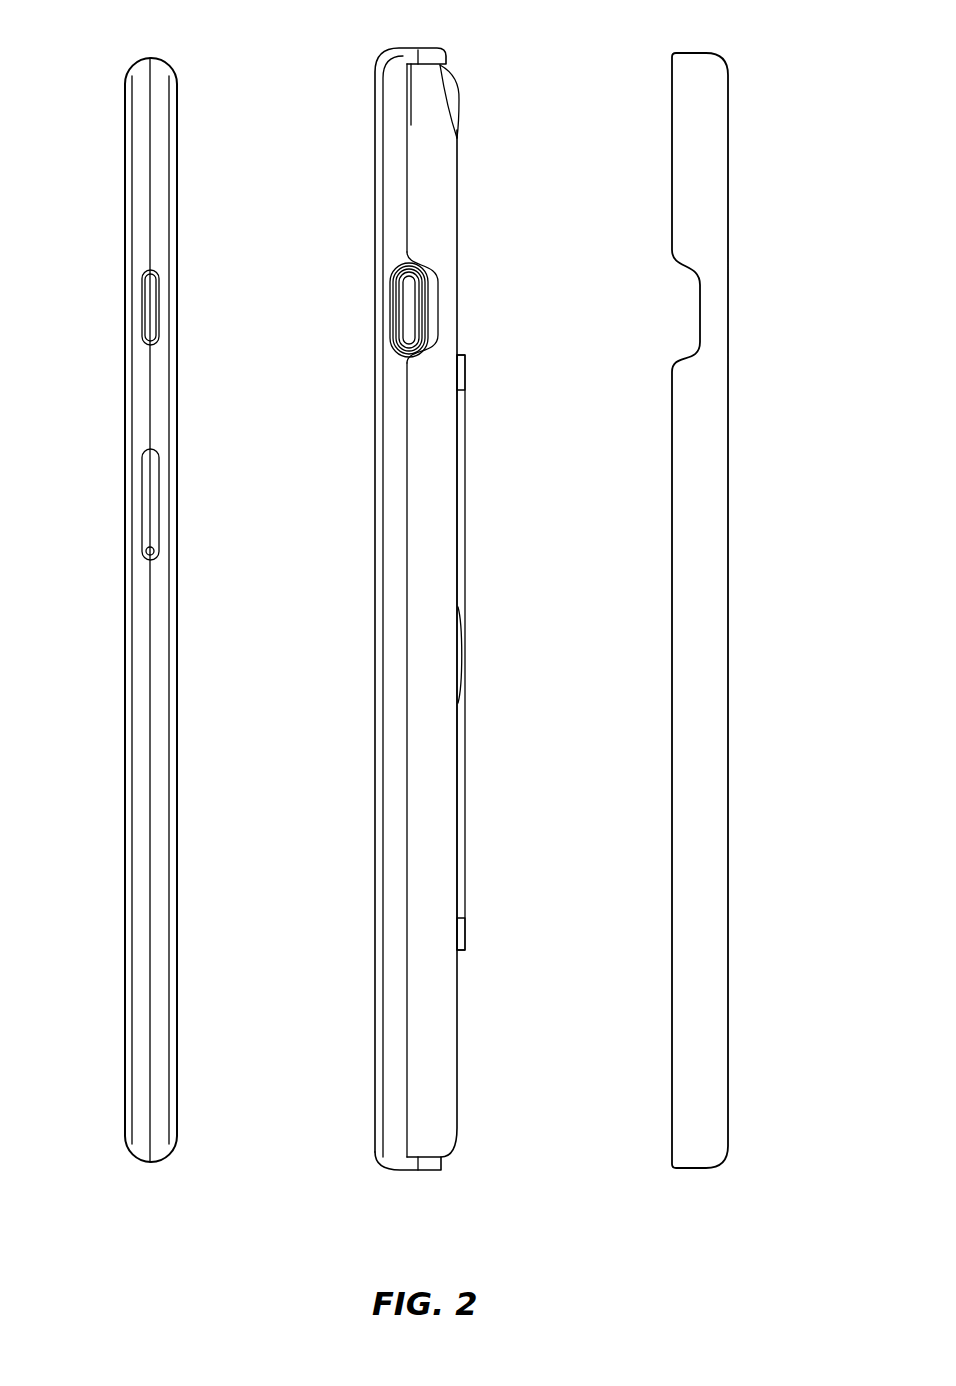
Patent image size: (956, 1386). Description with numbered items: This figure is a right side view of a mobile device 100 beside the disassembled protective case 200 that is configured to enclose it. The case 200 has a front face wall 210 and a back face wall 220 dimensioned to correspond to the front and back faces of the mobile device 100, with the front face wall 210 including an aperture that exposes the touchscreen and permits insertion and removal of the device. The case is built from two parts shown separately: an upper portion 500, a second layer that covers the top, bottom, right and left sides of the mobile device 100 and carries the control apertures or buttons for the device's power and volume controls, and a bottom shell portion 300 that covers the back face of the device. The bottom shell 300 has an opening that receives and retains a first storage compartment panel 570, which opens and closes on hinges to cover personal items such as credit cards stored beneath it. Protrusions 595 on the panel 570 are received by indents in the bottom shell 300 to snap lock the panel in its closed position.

The mobile device 100 is at (135, 64).
The protective case 200 is at (555, 649).
The front face wall 210 is at (375, 951).
The back face wall 220 is at (729, 830).
The bottom shell portion 300 is at (763, 610).
The upper portion 500 is at (416, 609).
The first storage compartment panel 570 is at (466, 790).
The protrusions 595 is at (466, 360).